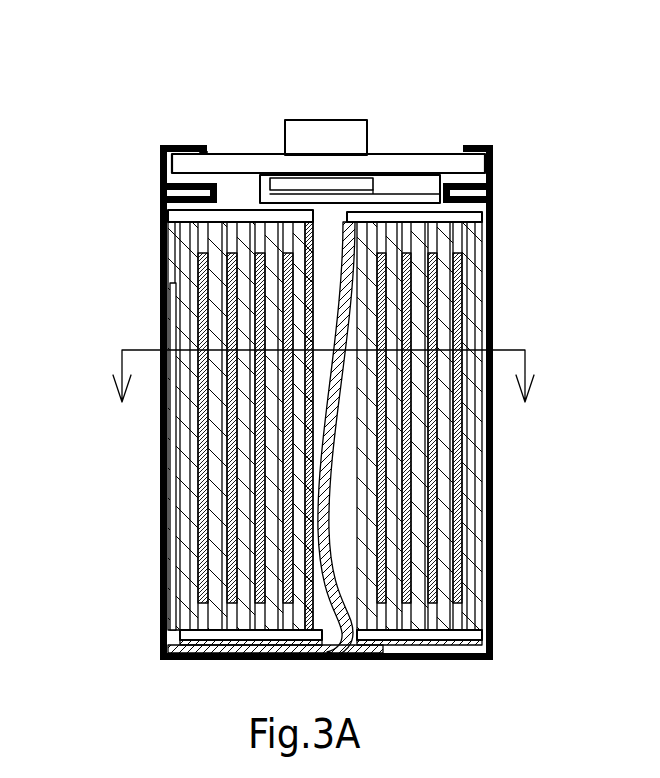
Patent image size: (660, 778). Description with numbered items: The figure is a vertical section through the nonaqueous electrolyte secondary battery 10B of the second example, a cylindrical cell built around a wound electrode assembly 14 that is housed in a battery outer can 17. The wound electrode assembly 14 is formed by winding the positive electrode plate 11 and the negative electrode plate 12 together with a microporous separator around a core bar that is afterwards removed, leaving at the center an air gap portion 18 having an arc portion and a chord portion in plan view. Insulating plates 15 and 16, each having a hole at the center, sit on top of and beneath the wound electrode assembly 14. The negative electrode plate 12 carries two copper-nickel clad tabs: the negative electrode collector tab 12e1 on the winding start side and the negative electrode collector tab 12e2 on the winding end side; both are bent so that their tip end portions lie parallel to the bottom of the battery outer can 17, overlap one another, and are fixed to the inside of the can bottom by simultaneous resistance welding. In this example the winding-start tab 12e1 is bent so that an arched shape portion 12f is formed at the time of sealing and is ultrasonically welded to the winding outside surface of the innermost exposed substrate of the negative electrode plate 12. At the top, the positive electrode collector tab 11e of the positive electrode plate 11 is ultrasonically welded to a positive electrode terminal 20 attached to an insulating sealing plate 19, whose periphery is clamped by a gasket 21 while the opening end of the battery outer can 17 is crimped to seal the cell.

The nonaqueous electrolyte secondary battery 10B is at (120, 87).
The positive electrode plate 11 is at (330, 407).
The positive electrode collector tab 11e is at (392, 203).
The negative electrode plate 12 is at (321, 438).
The negative electrode collector tab on the winding start side 12e1 is at (350, 603).
The negative electrode collector tab on the winding end side 12e2 is at (160, 298).
The arched shape portion 12f is at (350, 537).
The wound electrode assembly 14 is at (220, 518).
The insulating plate 15 is at (160, 215).
The insulating plate 16 is at (172, 625).
The battery outer can 17 is at (492, 542).
The air gap portion 18 is at (328, 255).
The sealing plate 19 is at (425, 155).
The positive electrode terminal 20 is at (300, 122).
The gasket 21 is at (203, 150).